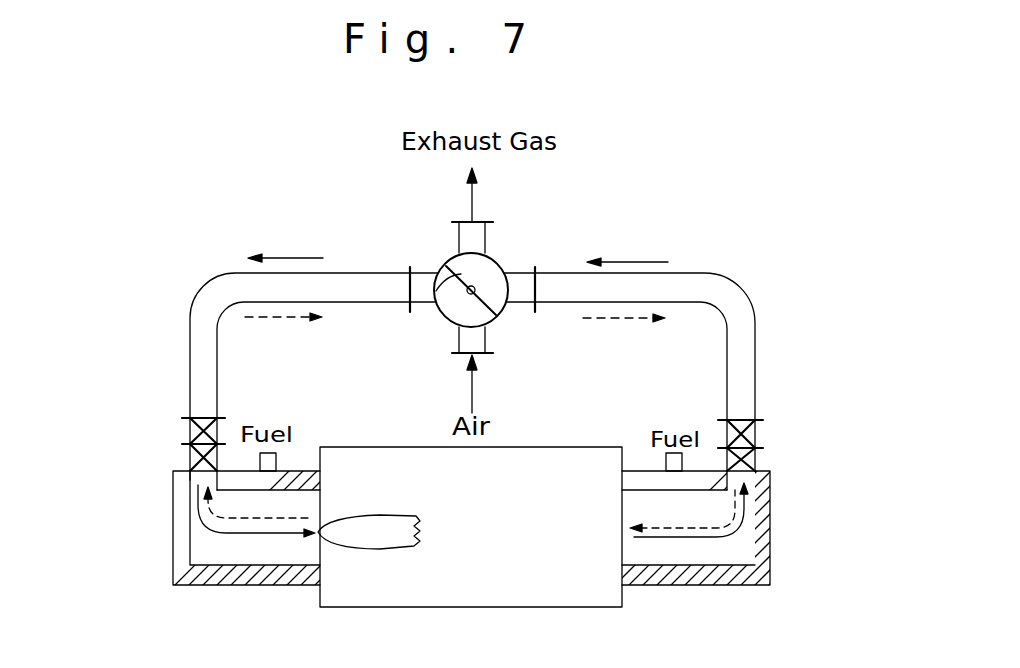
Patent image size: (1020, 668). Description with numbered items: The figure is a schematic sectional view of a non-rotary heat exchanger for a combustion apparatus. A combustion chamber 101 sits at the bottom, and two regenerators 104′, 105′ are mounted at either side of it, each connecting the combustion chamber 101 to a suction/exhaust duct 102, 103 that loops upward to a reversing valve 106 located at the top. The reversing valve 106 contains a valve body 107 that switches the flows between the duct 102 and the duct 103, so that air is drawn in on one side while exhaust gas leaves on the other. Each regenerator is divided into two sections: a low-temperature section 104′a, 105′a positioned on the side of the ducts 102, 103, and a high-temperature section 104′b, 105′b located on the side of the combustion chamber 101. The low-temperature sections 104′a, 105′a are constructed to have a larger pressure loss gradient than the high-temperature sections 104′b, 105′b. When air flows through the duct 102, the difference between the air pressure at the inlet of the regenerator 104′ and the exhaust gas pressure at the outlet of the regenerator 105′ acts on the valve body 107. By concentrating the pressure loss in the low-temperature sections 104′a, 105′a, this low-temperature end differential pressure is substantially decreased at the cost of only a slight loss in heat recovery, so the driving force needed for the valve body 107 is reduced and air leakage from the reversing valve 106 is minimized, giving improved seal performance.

The combustion chamber 101 is at (542, 447).
The suction/exhaust duct 102 is at (747, 370).
The suction/exhaust duct 103 is at (200, 331).
The regenerator 104′ is at (809, 431).
The low-temperature section 104′a is at (758, 433).
The high-temperature section 104′b is at (758, 463).
The regenerator 105′ is at (156, 424).
The low-temperature section 105′a is at (187, 431).
The high-temperature section 105′b is at (190, 462).
The reversing valve 106 is at (475, 267).
The valve body 107 is at (433, 279).